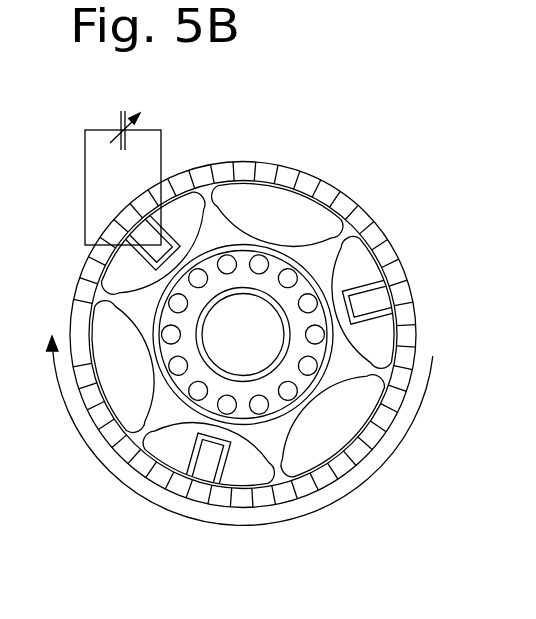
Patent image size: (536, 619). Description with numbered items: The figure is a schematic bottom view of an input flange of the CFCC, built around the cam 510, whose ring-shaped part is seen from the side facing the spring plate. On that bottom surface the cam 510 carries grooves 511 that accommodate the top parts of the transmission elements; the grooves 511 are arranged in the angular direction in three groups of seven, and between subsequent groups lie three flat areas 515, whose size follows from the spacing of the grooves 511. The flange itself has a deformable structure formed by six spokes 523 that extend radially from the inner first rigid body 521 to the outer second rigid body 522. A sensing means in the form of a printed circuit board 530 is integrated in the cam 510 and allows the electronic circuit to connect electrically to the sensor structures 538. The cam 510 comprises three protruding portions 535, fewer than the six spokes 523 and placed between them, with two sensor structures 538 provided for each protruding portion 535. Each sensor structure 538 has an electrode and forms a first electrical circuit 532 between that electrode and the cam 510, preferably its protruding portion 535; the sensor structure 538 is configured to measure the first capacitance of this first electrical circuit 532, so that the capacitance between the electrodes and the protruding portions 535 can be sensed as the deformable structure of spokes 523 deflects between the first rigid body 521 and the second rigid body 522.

The cam 510 is at (113, 522).
The grooves 511 is at (388, 257).
The flat areas 515 is at (333, 200).
The first rigid body 521 is at (305, 383).
The second rigid body 522 is at (372, 212).
The spokes 523 is at (277, 450).
The printed circuit board 530 is at (268, 220).
The first electrical circuit 532 is at (85, 188).
The protruding portions 535 is at (190, 245).
The sensor structures 538 is at (183, 233).